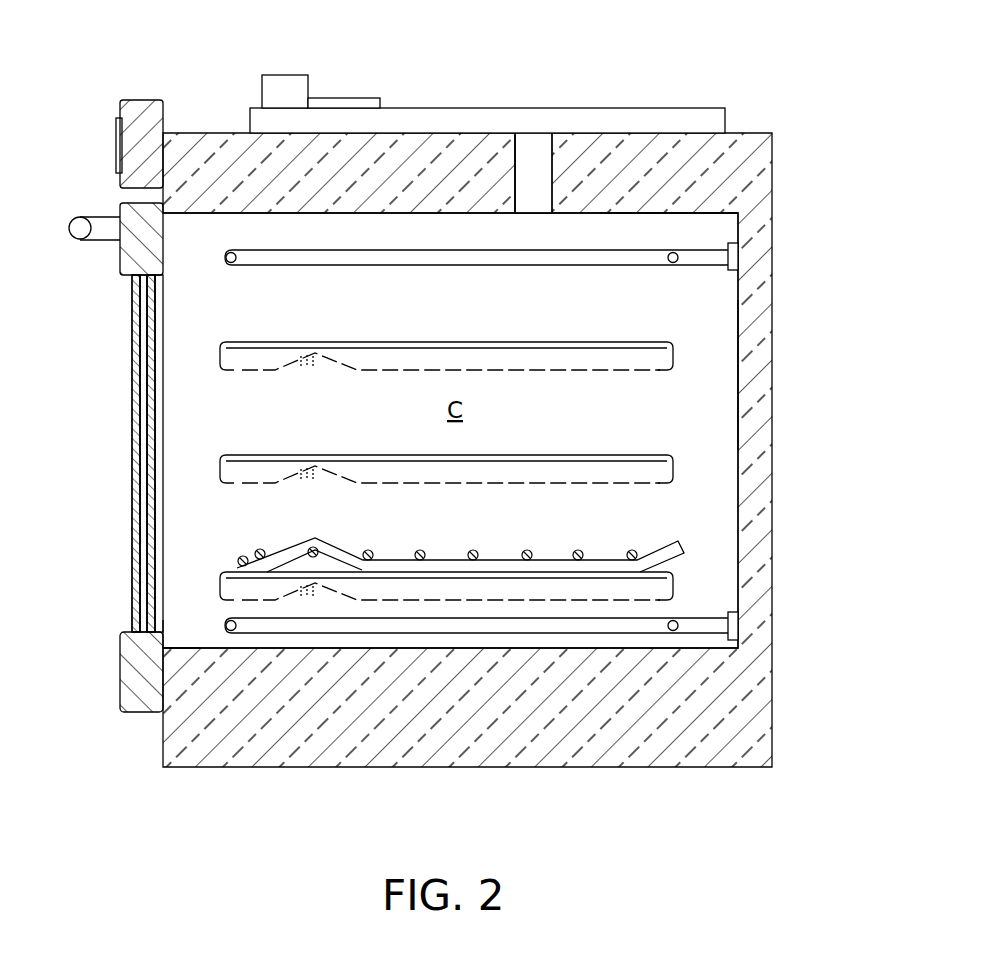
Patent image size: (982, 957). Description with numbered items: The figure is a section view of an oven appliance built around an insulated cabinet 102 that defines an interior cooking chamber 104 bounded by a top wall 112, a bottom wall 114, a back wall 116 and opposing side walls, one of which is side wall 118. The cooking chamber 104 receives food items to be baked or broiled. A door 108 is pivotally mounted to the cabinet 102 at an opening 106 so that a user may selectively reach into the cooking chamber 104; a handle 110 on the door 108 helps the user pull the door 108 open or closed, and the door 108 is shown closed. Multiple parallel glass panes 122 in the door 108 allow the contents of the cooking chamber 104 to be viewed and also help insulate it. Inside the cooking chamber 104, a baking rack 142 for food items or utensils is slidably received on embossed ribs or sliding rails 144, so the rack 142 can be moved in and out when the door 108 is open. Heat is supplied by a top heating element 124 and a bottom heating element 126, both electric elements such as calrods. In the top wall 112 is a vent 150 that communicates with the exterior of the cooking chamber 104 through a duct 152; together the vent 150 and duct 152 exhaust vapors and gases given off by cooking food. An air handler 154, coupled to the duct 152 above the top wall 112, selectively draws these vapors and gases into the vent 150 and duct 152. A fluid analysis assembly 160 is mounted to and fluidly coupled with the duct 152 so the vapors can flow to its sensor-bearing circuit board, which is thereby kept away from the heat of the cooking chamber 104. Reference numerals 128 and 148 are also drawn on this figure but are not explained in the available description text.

The insulated cabinet 102 is at (730, 172).
The cooking chamber 104 is at (712, 348).
The opening 106 is at (158, 487).
The door 108 is at (140, 246).
The handle 110 is at (76, 229).
The top wall 112 is at (700, 218).
The bottom wall 114 is at (194, 644).
The back wall 116 is at (730, 410).
The side wall 118 is at (450, 430).
The glass panes 122 is at (155, 338).
The top heating element 124 is at (558, 257).
The bottom heating element 126 is at (689, 617).
The upper latch block 128 is at (119, 138).
The baking rack 142 is at (655, 553).
The sliding rails 144 is at (540, 468).
The lower latch block 148 is at (156, 721).
The vent 150 is at (533, 197).
The duct 152 is at (627, 118).
The air handler 154 is at (277, 75).
The fluid analysis assembly 160 is at (352, 97).